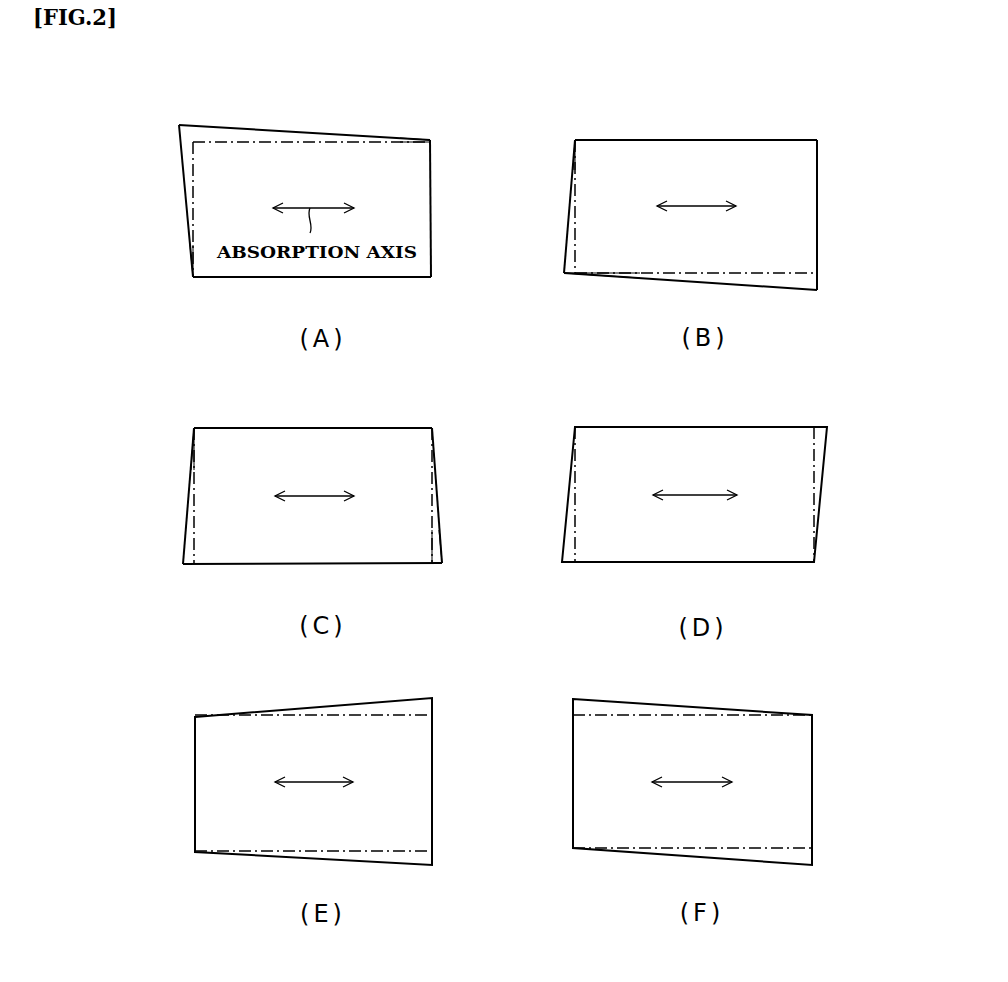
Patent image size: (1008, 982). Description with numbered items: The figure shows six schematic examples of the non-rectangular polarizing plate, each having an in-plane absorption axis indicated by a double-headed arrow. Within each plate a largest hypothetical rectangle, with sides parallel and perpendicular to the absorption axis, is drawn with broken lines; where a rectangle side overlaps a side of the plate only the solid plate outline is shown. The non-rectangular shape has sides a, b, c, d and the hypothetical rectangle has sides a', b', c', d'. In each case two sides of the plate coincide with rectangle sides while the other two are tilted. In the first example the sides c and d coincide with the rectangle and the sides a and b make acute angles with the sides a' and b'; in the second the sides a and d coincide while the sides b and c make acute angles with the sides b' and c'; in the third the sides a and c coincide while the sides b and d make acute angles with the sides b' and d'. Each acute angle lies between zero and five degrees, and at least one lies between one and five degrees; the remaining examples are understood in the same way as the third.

The side a of non-rectangular shape a is at (498, 251).
The side b of non-rectangular shape b is at (360, 344).
The side c of non-rectangular shape c is at (500, 418).
The side d of non-rectangular shape d is at (644, 351).
The side a' of hypothetical rectangle a' is at (311, 164).
The side b' of hypothetical rectangle b' is at (408, 352).
The side c' of hypothetical rectangle c' is at (696, 246).
The side d' of hypothetical rectangle d' is at (410, 495).